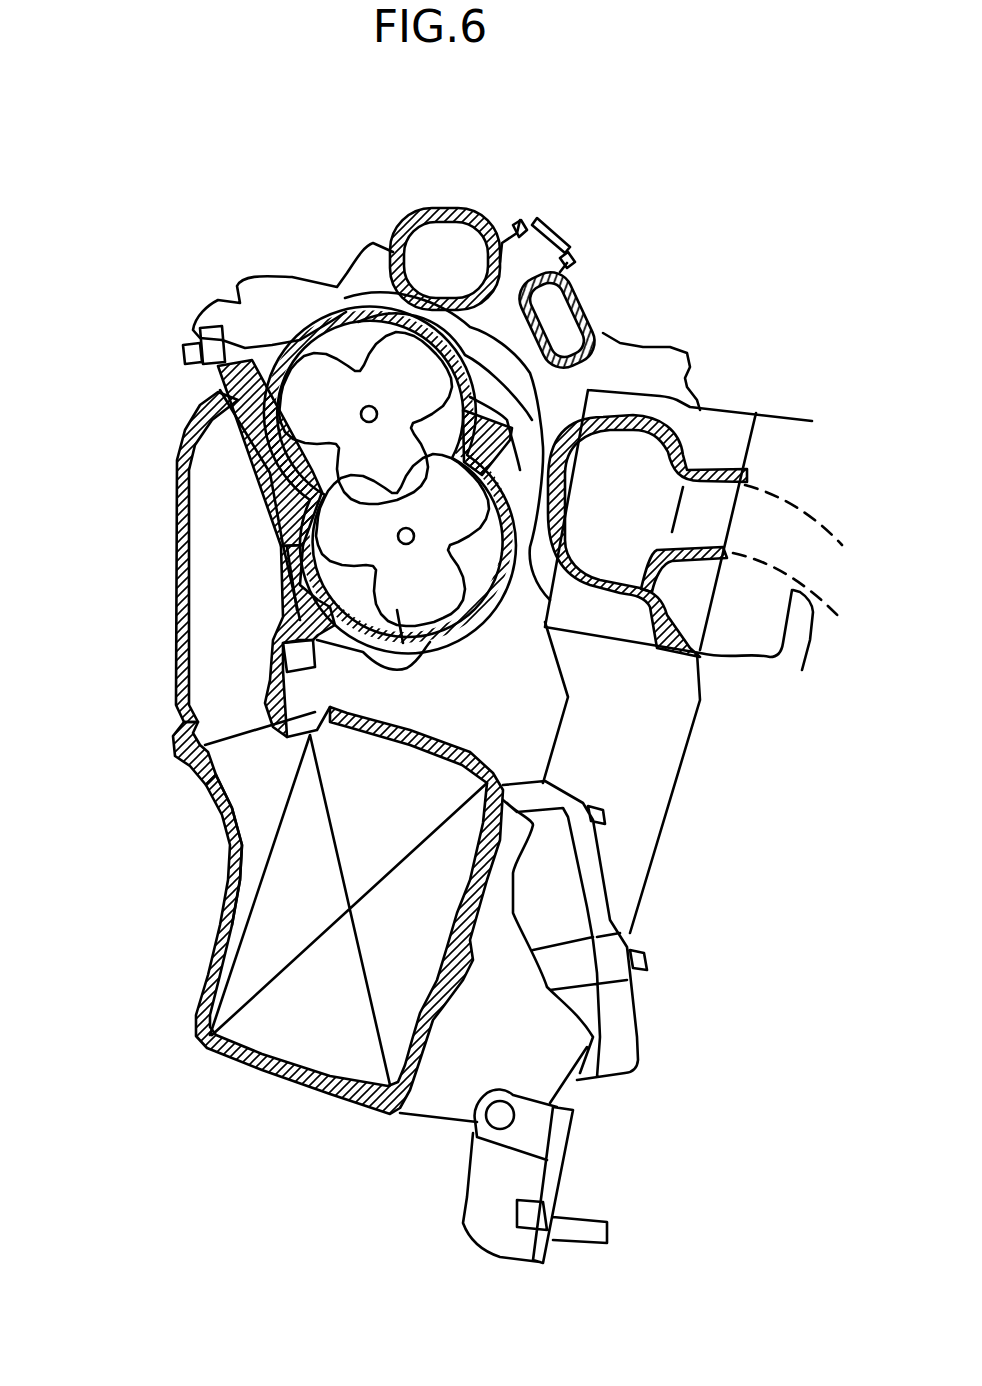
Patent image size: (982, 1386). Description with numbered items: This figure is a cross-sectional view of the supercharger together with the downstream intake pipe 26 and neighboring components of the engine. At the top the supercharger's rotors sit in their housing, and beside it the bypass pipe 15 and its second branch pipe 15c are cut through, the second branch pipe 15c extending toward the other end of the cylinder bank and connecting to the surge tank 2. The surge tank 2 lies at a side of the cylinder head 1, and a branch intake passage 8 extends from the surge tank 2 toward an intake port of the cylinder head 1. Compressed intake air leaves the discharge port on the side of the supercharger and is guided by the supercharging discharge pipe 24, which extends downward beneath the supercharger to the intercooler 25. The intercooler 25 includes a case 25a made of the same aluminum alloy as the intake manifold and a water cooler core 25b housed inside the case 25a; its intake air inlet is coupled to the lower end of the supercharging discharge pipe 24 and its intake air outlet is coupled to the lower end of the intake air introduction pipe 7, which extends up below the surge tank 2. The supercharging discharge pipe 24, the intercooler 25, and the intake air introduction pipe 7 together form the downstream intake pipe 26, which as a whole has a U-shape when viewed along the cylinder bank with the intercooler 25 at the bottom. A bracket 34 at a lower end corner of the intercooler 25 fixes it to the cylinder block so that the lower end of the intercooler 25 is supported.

The cylinder head 1 is at (785, 413).
The surge tank 2 is at (676, 420).
The intake air introduction pipe 7 is at (668, 812).
The branch intake passage 8 is at (710, 497).
The bypass pipe 15 is at (447, 240).
The second branch pipe 15c is at (557, 317).
The supercharging discharge pipe 24 is at (175, 533).
The intercooler 25 is at (187, 1054).
The case 25a is at (216, 848).
The water cooler core 25b is at (313, 1045).
The downstream intake pipe 26 is at (193, 808).
The bracket 34 is at (482, 1217).